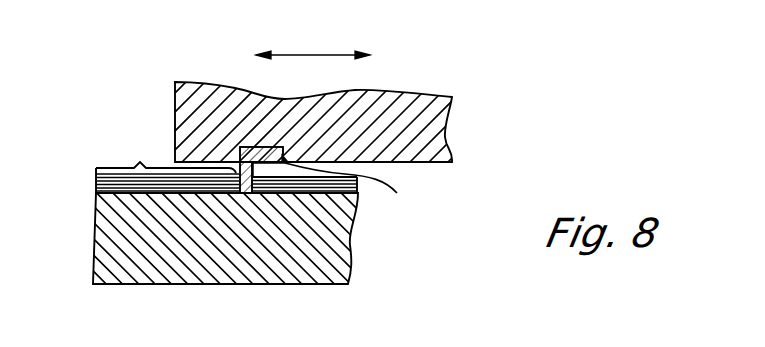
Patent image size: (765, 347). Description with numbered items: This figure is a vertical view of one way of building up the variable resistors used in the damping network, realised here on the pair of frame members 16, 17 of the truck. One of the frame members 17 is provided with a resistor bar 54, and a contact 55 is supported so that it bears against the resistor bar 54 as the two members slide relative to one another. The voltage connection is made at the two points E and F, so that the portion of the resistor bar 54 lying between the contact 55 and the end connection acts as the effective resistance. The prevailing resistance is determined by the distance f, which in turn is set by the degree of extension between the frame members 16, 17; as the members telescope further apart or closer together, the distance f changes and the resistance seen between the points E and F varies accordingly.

The frame member 16 is at (120, 228).
The frame member 17 is at (430, 118).
The resistor bar 54 is at (358, 177).
The contact 55 is at (254, 148).
The voltage connection point E is at (93, 169).
The distance f is at (167, 163).
The voltage connection point F is at (332, 184).